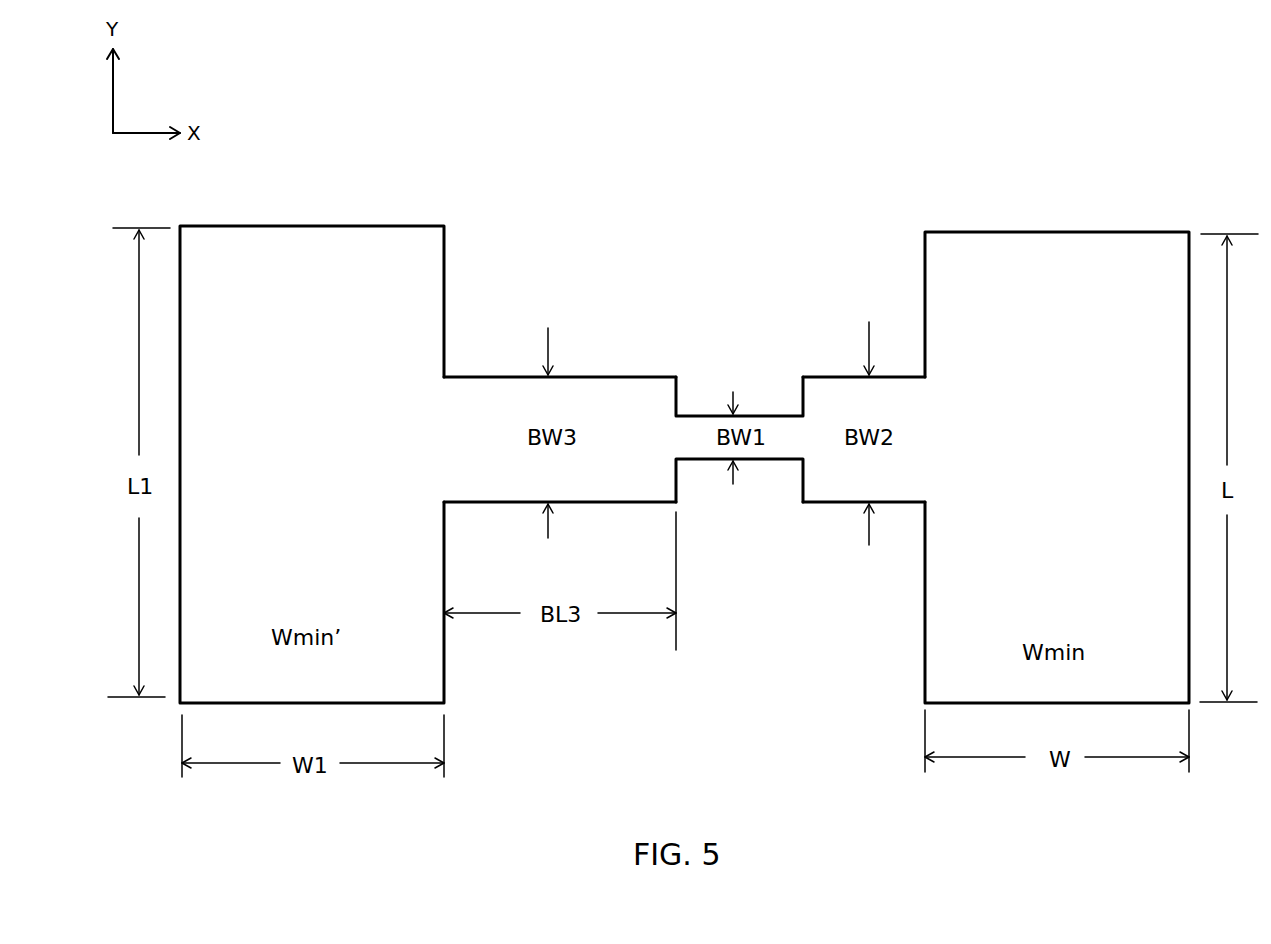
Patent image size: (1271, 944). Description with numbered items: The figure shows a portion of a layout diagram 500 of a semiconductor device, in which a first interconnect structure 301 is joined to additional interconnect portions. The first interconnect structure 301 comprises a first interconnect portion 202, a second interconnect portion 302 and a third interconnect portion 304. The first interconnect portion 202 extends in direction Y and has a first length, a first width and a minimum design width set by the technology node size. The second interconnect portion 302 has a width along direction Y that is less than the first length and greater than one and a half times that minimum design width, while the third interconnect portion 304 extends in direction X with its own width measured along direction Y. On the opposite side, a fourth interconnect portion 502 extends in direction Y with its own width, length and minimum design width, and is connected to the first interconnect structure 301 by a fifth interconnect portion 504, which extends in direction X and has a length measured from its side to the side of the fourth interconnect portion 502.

The layout diagram 500 is at (1217, 120).
The fourth interconnect portion 502 is at (286, 245).
The fifth interconnect portion 504 is at (457, 395).
The first interconnect structure 301 is at (810, 233).
The second interconnect portion 302 is at (830, 375).
The third interconnect portion 304 is at (695, 422).
The first interconnect portion 202 is at (1122, 267).